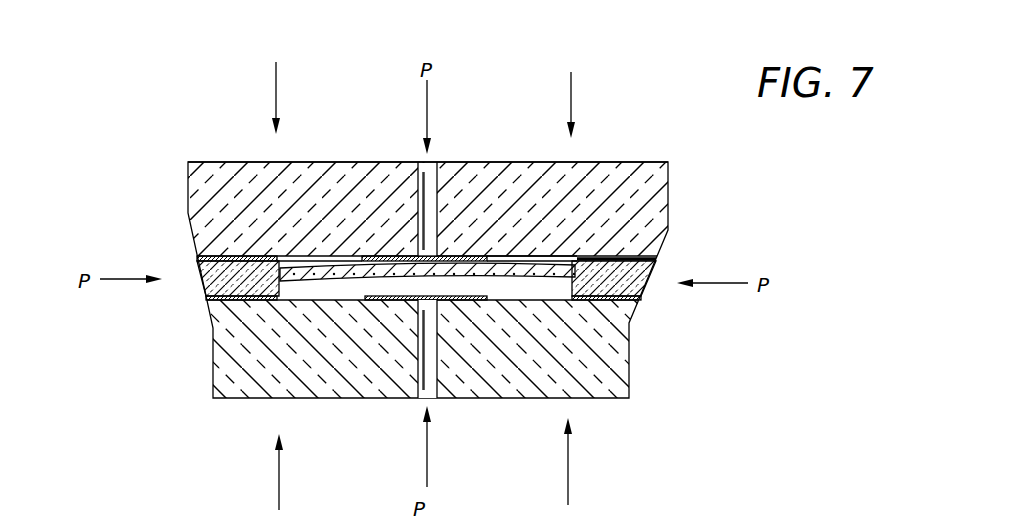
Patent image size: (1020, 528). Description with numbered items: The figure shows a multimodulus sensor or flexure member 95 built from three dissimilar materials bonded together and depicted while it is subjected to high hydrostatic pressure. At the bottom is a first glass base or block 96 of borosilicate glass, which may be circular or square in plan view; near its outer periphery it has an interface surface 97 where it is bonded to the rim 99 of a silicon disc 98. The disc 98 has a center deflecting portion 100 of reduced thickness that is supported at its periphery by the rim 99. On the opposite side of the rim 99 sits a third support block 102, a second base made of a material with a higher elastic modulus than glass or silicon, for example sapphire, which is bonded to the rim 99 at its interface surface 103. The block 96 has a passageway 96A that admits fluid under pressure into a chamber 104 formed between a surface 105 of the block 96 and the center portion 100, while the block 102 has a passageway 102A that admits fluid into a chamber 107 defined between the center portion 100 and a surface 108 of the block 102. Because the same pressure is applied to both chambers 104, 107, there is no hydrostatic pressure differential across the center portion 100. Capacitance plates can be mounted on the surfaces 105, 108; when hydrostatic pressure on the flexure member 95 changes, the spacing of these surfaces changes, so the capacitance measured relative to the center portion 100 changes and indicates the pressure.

The flexure member 95 is at (668, 157).
The first glass base or block 96 is at (260, 388).
The passageway 96A is at (448, 386).
The interface surface 97 is at (632, 323).
The disc 98 is at (538, 263).
The rim 99 is at (195, 295).
The center deflecting portion 100 is at (397, 278).
The third support block 102 is at (228, 112).
The passageway 102A is at (438, 161).
The interface surface 103 is at (197, 256).
The chamber 104 is at (536, 286).
The surface 105 is at (317, 290).
The chamber 107 is at (343, 131).
The surface 108 is at (358, 218).